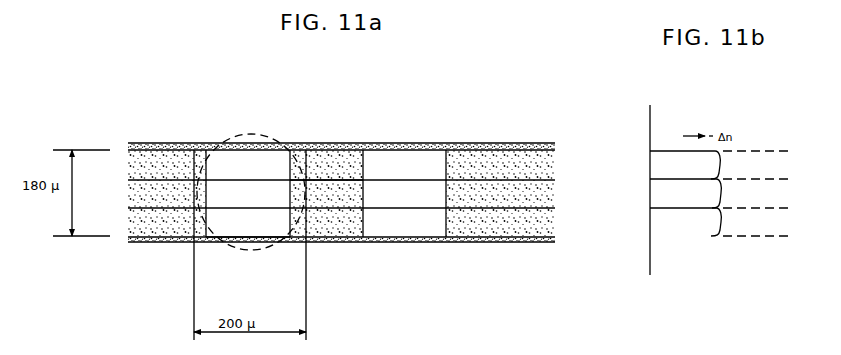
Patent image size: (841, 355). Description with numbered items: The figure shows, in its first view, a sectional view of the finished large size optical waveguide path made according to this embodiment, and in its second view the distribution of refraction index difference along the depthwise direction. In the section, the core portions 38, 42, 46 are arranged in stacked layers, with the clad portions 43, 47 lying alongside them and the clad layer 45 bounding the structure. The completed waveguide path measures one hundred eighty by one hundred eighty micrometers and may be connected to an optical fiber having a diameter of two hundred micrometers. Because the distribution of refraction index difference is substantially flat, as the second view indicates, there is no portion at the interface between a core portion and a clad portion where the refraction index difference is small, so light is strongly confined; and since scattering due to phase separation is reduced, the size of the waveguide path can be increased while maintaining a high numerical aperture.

The core portion 38 is at (272, 223).
The core portion 42 is at (235, 197).
The clad portion 43 is at (350, 203).
The clad layer 45 is at (505, 145).
The core portion 46 is at (238, 158).
The clad portion 47 is at (341, 160).